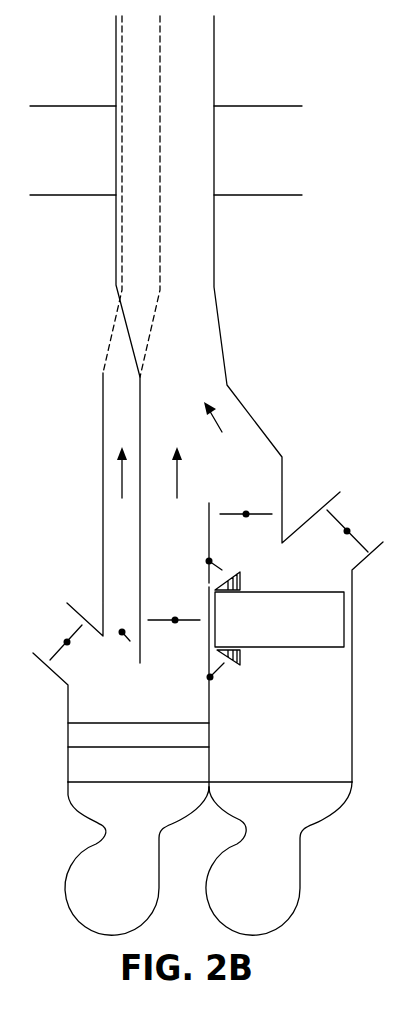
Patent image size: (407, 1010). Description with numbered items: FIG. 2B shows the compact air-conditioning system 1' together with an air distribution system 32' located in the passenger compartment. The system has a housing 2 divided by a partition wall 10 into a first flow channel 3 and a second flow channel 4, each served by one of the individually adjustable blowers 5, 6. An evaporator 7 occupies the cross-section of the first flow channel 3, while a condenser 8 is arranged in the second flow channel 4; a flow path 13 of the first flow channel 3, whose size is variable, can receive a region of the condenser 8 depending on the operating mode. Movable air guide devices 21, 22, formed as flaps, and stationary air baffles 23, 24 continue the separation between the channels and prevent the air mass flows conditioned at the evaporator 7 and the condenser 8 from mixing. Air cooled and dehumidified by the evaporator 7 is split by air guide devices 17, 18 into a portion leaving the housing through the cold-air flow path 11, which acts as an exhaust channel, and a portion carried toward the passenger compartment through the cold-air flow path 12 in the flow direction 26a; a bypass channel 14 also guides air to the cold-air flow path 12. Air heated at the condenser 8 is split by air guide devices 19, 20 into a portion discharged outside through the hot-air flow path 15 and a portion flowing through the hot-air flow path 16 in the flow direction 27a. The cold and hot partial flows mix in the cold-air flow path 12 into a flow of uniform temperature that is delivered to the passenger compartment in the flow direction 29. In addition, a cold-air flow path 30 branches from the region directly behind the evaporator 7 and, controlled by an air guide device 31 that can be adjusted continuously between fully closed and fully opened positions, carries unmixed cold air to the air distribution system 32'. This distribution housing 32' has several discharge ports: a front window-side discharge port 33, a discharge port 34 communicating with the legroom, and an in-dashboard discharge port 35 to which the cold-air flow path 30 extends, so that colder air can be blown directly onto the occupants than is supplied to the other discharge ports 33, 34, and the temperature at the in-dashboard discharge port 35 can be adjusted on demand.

The air-conditioning system 1' is at (351, 437).
The housing 2 is at (102, 495).
The first flow channel 3 is at (89, 532).
The second flow channel 4 is at (365, 695).
The blower 5 is at (78, 885).
The blower 6 is at (218, 885).
The evaporator 7 is at (80, 733).
The condenser 8 is at (330, 617).
The partition wall 10 is at (210, 713).
The cold-air flow path 11 is at (53, 640).
The cold-air flow path 12 is at (185, 537).
The flow path 13 is at (210, 583).
The bypass channel 14 is at (187, 610).
The hot-air flow path 15 is at (375, 526).
The hot-air flow path 16 is at (263, 501).
The air guide device 17 is at (67, 642).
The air guide device 18 is at (158, 619).
The air guide device 19 is at (347, 531).
The air guide device 20 is at (272, 514).
The air guide device 21 is at (224, 663).
The air guide device 22 is at (222, 570).
The air baffle 23 is at (240, 657).
The air baffle 24 is at (240, 580).
The flow direction 26a is at (118, 457).
The flow direction 27a is at (217, 423).
The flow direction 29 is at (178, 447).
The cold-air flow path 30 is at (138, 82).
The air guide device 31 is at (122, 632).
The air distribution system 32' is at (185, 339).
The front window-side discharge port 33 is at (67, 163).
The discharge port communicating with legroom 34 is at (280, 163).
The in-dashboard discharge port 35 is at (197, 58).